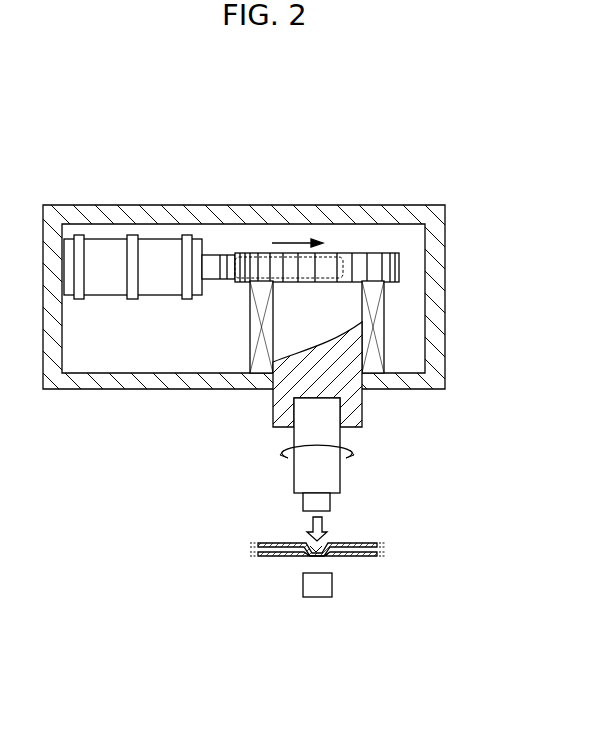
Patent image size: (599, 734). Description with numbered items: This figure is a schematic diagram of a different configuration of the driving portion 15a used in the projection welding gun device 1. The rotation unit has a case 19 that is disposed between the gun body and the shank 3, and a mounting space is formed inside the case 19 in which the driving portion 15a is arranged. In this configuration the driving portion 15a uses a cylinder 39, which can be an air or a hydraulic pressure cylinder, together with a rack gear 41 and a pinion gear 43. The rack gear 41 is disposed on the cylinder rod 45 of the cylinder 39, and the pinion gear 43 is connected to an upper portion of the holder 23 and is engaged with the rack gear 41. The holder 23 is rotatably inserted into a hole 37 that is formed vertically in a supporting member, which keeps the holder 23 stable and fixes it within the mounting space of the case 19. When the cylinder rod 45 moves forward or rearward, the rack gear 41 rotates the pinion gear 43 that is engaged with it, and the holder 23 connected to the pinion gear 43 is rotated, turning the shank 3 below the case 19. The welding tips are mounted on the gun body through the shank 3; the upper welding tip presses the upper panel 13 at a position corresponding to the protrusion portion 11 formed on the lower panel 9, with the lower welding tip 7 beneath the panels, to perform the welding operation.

The projection welding gun device 1 is at (85, 172).
The case 19 is at (337, 205).
The cylinder 39 is at (162, 247).
The cylinder rod 45 is at (213, 262).
The rack gear 41 is at (246, 253).
The pinion gear 43 is at (399, 263).
The driving portion 15a is at (223, 315).
The hole 37 is at (280, 336).
The holder 23 is at (338, 308).
The shank 3 is at (340, 475).
The upper panel 13 is at (262, 543).
The lower panel 9 is at (372, 556).
The protrusion portion 11 is at (325, 545).
The lower welding tip 7 is at (317, 597).